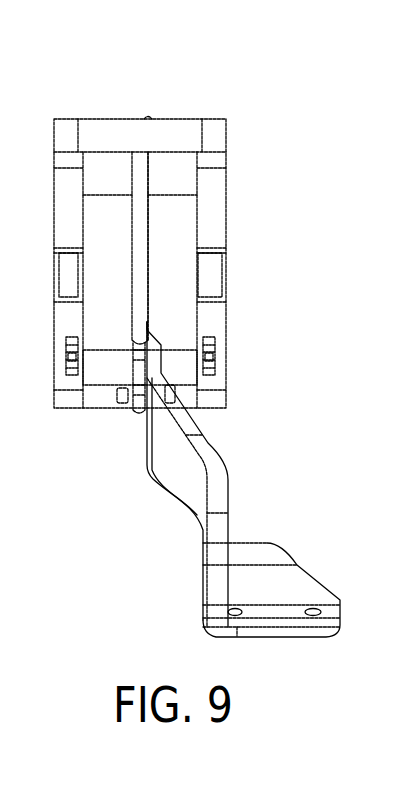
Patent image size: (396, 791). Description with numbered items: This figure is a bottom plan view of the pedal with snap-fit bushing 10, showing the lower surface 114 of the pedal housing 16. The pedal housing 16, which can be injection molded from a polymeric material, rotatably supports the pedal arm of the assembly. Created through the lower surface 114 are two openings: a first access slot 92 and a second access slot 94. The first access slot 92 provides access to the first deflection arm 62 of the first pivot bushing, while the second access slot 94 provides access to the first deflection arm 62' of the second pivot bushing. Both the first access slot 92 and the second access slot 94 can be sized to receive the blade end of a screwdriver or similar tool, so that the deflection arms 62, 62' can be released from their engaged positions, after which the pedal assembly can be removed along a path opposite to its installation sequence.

The pedal with snap-fit bushing 10 is at (253, 103).
The pedal housing 16 is at (218, 200).
The lower surface 114 is at (217, 315).
The second access slot 94 is at (66, 340).
The first deflection arm of the second pivot bushing 62' is at (39, 372).
The first access slot 92 is at (216, 340).
The first deflection arm 62 is at (242, 373).